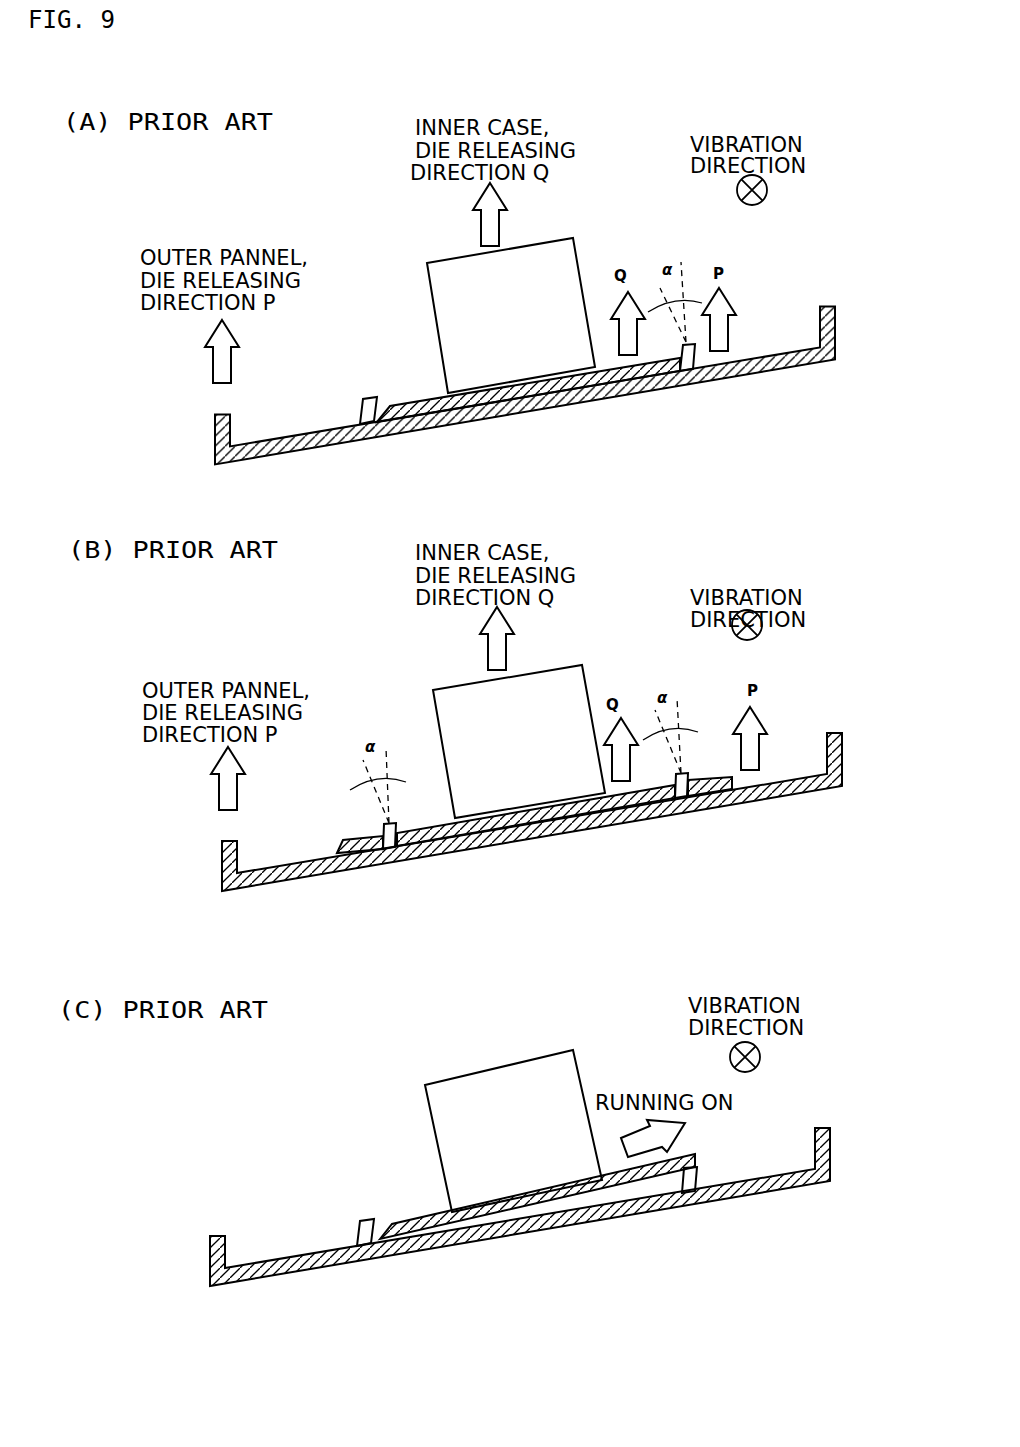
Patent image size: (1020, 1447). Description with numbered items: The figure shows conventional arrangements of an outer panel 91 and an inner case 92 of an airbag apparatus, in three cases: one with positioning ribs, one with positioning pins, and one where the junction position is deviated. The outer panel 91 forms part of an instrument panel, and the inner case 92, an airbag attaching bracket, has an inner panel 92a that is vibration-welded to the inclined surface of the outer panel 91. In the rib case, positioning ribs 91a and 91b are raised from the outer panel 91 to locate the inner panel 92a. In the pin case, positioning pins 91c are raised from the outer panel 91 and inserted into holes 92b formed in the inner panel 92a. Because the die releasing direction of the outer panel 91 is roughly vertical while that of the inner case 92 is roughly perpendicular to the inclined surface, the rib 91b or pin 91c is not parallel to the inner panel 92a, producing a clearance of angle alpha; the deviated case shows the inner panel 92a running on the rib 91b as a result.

The outer panel 91 is at (544, 409).
The positioning rib 91a is at (365, 397).
The positioning rib 91b is at (694, 358).
The positioning pin 91c is at (383, 830).
The inner case 92 is at (560, 250).
The inner panel 92a is at (427, 397).
The hole 92b is at (433, 849).